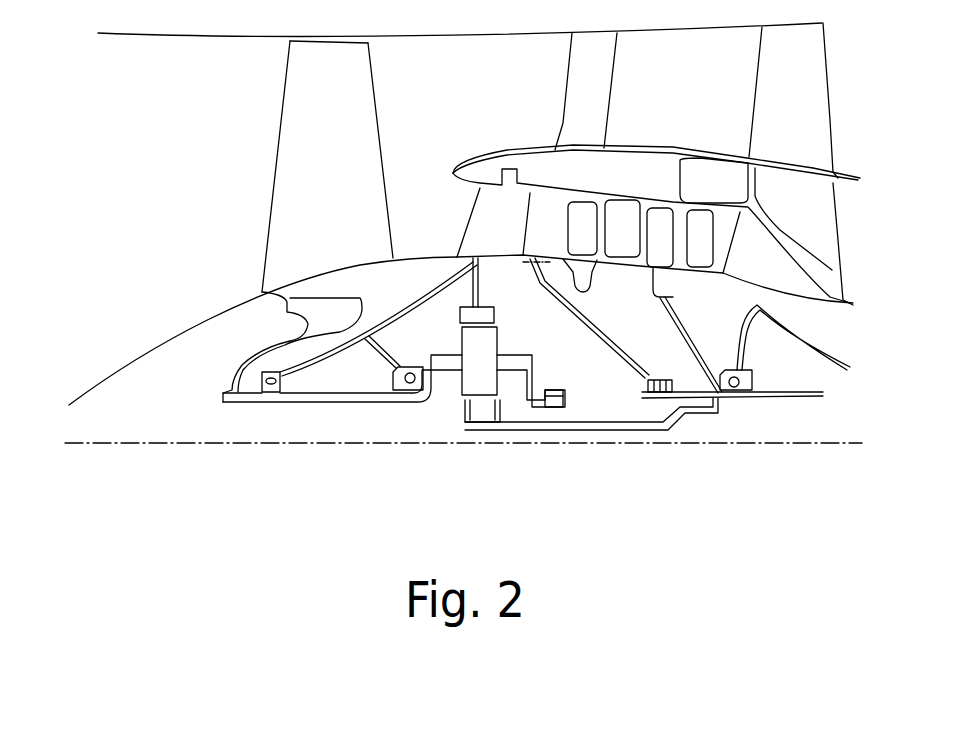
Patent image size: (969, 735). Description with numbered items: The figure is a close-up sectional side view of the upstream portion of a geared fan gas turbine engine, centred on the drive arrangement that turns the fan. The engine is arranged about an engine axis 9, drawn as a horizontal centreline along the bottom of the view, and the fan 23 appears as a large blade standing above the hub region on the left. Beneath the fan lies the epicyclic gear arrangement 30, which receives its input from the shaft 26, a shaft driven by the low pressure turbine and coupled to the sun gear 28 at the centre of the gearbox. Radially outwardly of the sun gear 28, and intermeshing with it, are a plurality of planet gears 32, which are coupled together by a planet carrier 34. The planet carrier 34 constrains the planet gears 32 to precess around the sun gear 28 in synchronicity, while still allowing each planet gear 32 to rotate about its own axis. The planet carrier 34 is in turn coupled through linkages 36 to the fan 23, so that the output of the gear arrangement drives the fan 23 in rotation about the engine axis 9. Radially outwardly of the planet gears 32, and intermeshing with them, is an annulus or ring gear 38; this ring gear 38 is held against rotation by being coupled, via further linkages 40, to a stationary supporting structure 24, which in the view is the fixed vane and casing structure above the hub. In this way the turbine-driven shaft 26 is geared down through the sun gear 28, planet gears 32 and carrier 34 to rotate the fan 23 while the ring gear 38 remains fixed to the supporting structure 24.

The engine axis 9 is at (218, 445).
The fan 23 is at (297, 205).
The stationary supporting structure 24 is at (492, 221).
The shaft 26 is at (628, 427).
The sun gear 28 is at (483, 412).
The epicyclic gear arrangement 30 is at (440, 399).
The planet gears 32 is at (467, 380).
The planet carrier 34 is at (522, 394).
The linkages 36 is at (437, 382).
The ring gear 38 is at (461, 317).
The linkages 40 is at (480, 278).